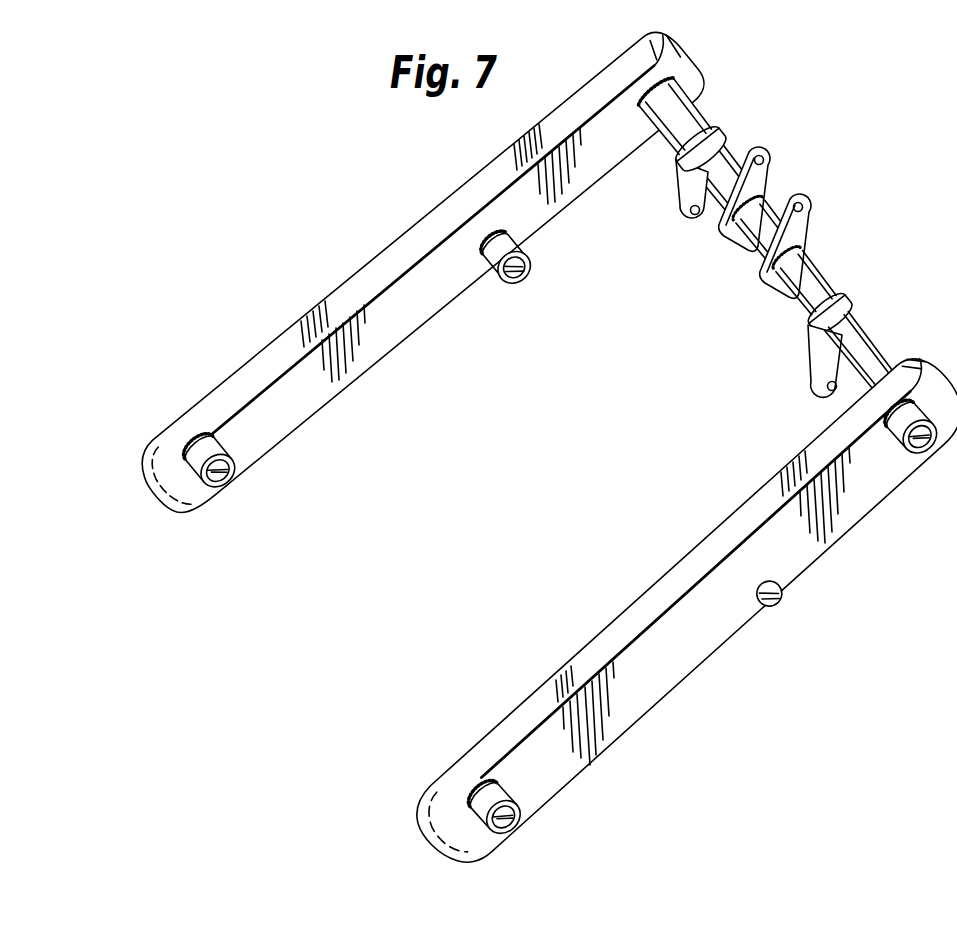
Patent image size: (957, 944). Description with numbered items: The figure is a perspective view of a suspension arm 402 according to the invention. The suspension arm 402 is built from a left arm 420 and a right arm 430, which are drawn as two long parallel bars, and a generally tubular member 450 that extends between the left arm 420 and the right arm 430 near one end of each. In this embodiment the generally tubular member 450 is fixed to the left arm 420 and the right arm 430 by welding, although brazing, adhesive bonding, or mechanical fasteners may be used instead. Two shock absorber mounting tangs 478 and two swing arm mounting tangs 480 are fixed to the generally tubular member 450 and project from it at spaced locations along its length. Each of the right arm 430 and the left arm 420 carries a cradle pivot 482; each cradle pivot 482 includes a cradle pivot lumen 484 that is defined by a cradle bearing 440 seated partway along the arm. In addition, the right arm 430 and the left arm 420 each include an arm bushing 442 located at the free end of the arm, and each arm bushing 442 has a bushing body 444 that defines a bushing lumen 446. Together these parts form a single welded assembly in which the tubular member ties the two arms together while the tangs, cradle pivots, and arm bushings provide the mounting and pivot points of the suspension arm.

The suspension arm 402 is at (542, 472).
The left arm 420 is at (646, 691).
The right arm 430 is at (280, 337).
The cradle bearing 440 is at (528, 255).
The arm bushing 442 is at (247, 494).
The bushing body 444 is at (236, 461).
The bushing lumen 446 is at (208, 486).
The generally tubular member 450 is at (812, 286).
The shock absorber mounting tang 478 is at (815, 222).
The swing arm mounting tang 480 is at (672, 202).
The cradle pivot 482 is at (504, 300).
The cradle pivot lumen 484 is at (530, 275).